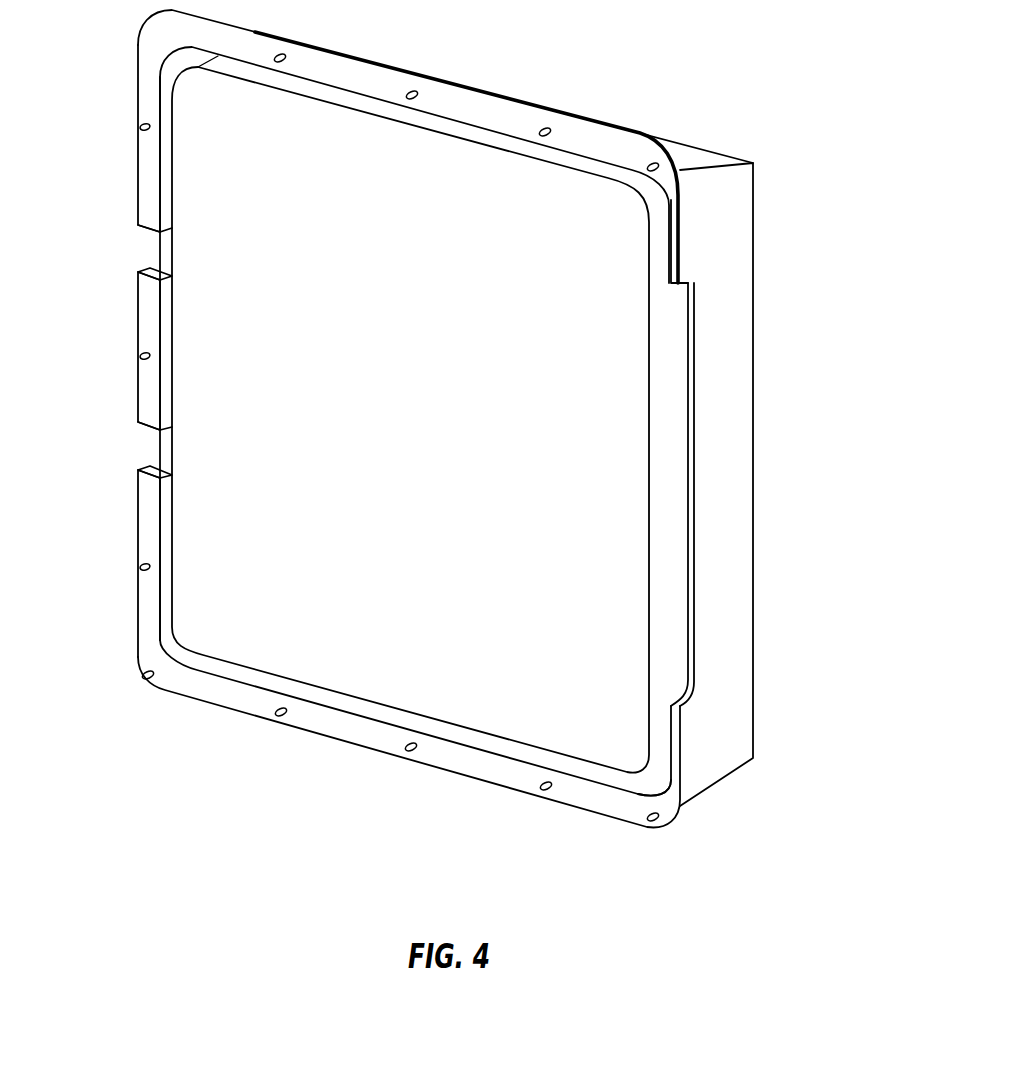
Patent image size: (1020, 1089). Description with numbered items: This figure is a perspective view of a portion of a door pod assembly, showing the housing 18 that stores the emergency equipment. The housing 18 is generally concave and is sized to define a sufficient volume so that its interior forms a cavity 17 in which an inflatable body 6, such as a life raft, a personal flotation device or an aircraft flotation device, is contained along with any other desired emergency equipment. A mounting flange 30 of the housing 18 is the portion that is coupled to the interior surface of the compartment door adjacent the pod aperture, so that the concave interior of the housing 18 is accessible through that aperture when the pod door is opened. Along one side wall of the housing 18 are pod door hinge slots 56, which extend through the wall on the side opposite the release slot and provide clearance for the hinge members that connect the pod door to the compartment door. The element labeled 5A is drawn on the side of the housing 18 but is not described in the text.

The mounting flange 30 is at (488, 112).
The housing 18 is at (733, 212).
The side plate 5A is at (690, 368).
The inflatable body 6 is at (613, 548).
The cavity 17 is at (652, 773).
The pod door hinge slots 56 is at (149, 240).